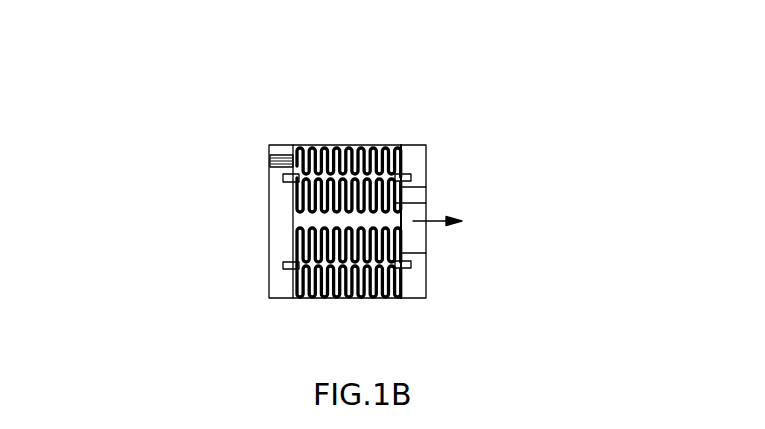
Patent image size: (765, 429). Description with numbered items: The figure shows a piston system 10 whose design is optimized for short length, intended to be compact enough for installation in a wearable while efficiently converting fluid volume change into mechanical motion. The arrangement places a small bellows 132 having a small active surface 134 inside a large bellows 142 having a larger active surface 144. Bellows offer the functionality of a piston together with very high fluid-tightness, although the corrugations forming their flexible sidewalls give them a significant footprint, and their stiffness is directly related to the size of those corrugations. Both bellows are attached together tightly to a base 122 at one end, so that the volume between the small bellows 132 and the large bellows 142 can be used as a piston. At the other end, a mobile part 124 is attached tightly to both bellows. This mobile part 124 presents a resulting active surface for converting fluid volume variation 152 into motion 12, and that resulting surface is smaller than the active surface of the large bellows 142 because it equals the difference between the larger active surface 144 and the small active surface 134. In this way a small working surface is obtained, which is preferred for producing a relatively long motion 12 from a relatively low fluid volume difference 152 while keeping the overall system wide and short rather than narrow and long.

The piston system 10 is at (180, 93).
The motion 12 is at (430, 224).
The base 122 is at (279, 291).
The mobile part 124 is at (427, 289).
The small bellows 132 is at (427, 204).
The small active surface 134 is at (258, 195).
The large bellows 142 is at (338, 293).
The larger active surface 144 is at (175, 160).
The fluid volume variation 152 is at (268, 163).